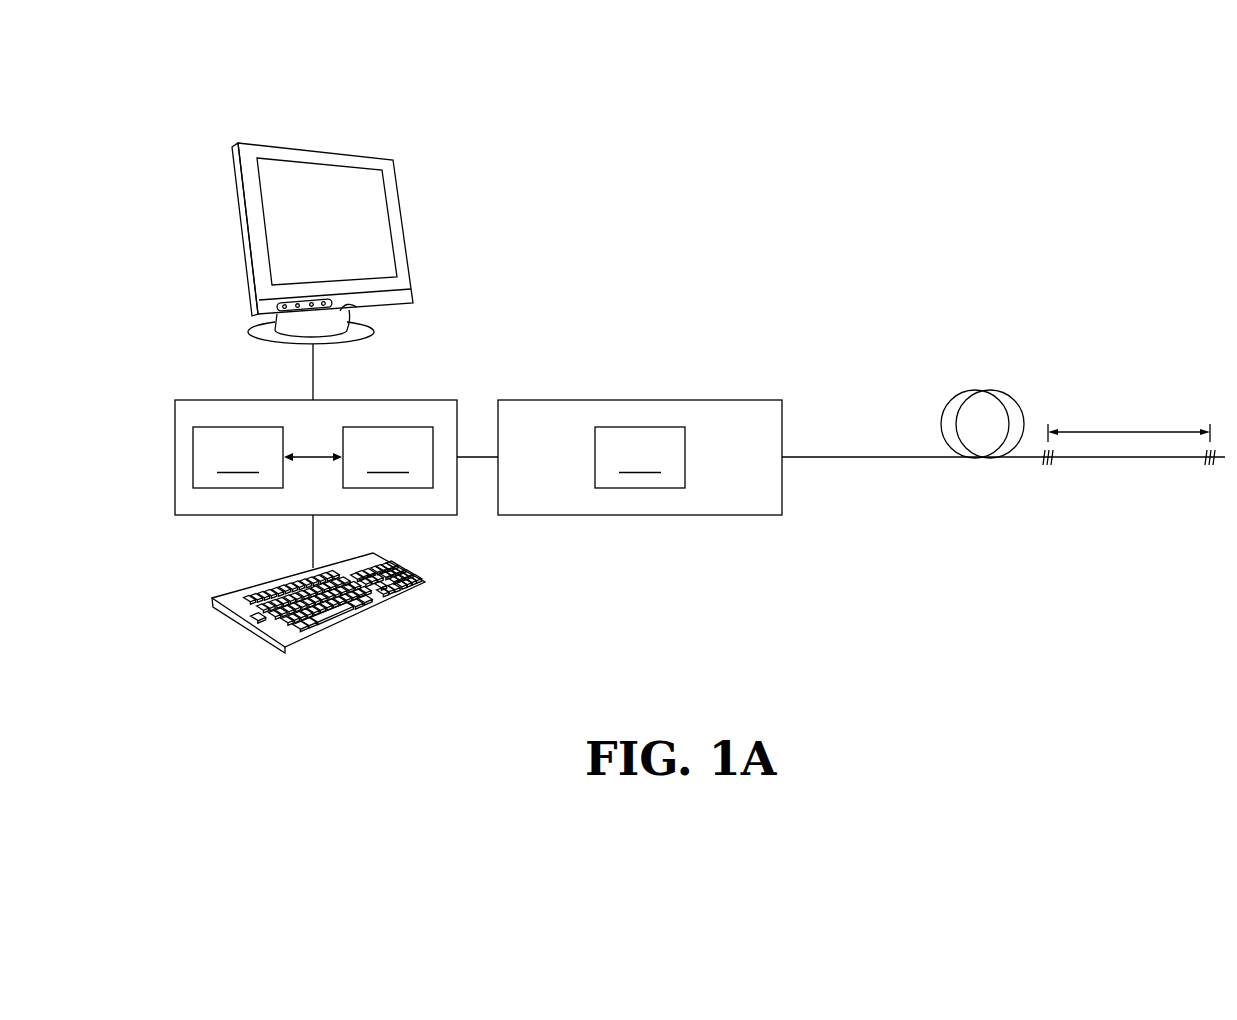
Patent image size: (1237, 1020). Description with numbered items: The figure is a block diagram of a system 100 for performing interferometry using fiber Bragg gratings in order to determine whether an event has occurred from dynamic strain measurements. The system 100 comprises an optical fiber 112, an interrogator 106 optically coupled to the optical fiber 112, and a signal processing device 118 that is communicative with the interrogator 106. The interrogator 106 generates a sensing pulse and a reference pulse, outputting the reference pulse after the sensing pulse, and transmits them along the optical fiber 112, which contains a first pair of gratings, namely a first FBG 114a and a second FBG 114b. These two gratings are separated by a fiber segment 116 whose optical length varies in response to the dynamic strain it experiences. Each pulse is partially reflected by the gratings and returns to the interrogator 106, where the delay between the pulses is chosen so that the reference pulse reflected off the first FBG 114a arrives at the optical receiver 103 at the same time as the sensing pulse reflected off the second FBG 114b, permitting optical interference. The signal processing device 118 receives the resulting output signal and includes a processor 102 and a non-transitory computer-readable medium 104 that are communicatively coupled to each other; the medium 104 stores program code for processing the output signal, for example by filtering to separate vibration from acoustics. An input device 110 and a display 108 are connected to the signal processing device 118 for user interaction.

The system 100 is at (838, 163).
The processor 102 is at (238, 457).
The optical receiver 103 is at (640, 457).
The non-transitory computer-readable medium 104 is at (388, 457).
The interrogator 106 is at (698, 400).
The display 108 is at (322, 151).
The input device 110 is at (345, 622).
The optical fiber 112 is at (1002, 392).
The first fiber Bragg grating 114a is at (1043, 465).
The second fiber Bragg grating 114b is at (1203, 465).
The fiber segment 116 is at (1130, 430).
The signal processing device 118 is at (388, 400).